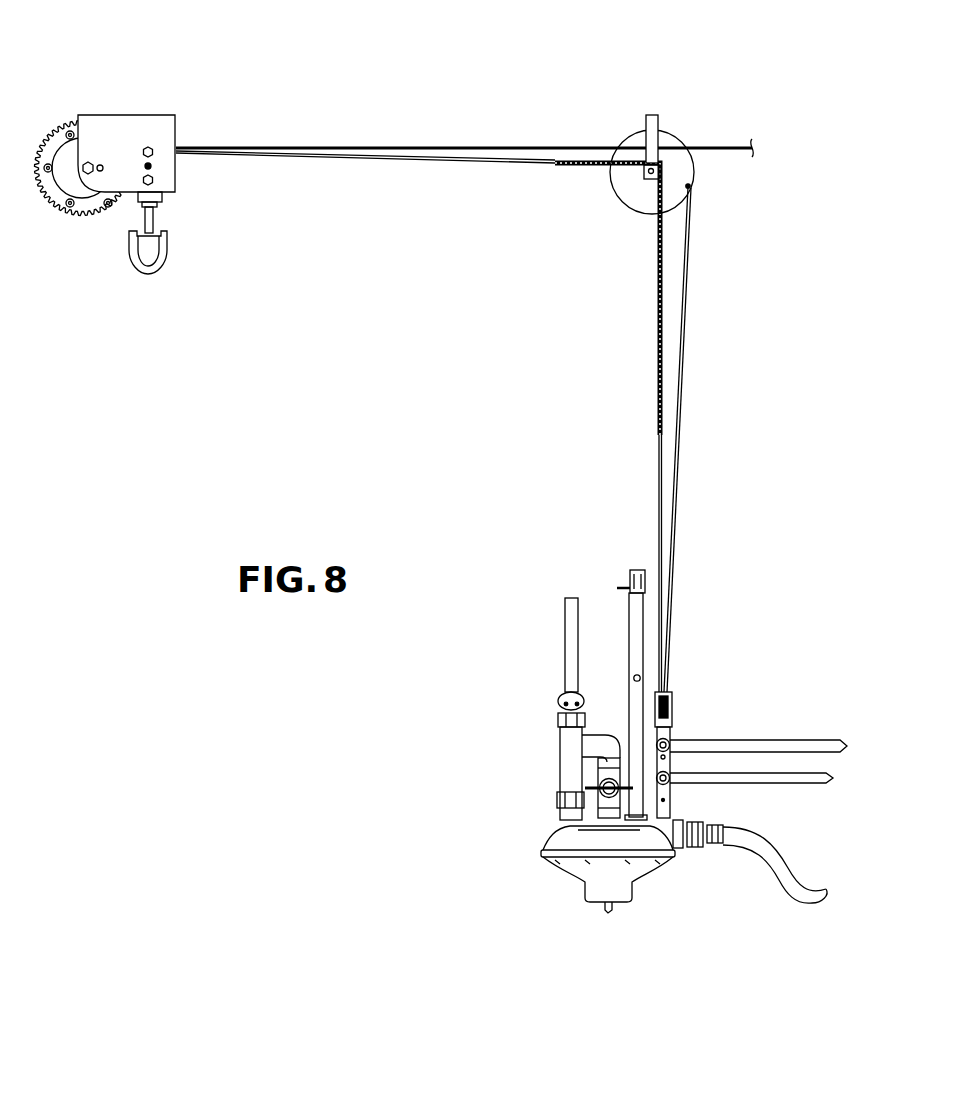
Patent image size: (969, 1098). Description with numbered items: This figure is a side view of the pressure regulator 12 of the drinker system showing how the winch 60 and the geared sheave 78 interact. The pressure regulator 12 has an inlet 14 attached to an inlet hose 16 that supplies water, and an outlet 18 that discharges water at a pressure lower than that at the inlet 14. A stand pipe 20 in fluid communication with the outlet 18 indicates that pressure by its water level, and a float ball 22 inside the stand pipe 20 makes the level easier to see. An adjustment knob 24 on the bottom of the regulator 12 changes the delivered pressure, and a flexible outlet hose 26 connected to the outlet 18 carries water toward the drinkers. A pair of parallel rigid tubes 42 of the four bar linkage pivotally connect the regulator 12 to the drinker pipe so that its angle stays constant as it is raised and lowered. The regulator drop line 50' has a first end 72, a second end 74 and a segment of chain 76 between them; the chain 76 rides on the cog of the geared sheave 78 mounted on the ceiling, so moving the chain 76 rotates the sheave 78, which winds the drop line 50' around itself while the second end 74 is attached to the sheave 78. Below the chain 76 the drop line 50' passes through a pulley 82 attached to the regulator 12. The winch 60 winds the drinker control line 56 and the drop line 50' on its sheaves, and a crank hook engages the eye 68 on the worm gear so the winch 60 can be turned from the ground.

The pressure regulator 12 is at (557, 838).
The inlet 14 is at (568, 758).
The inlet hose 16 is at (570, 650).
The outlet 18 is at (700, 850).
The stand pipe 20 is at (634, 607).
The float ball 22 is at (639, 675).
The adjustment knob 24 is at (610, 912).
The flexible outlet hose 26 is at (792, 893).
The tubes 42 is at (818, 743).
The regulator drop line 50' is at (486, 422).
The drinker control line 56 is at (722, 148).
The winch 60 is at (124, 115).
The eye 68 is at (160, 268).
The first end 72 is at (316, 160).
The second end 74 is at (688, 186).
The chain 76 is at (660, 243).
The geared sheave 78 is at (628, 132).
The pulley 82 is at (670, 708).